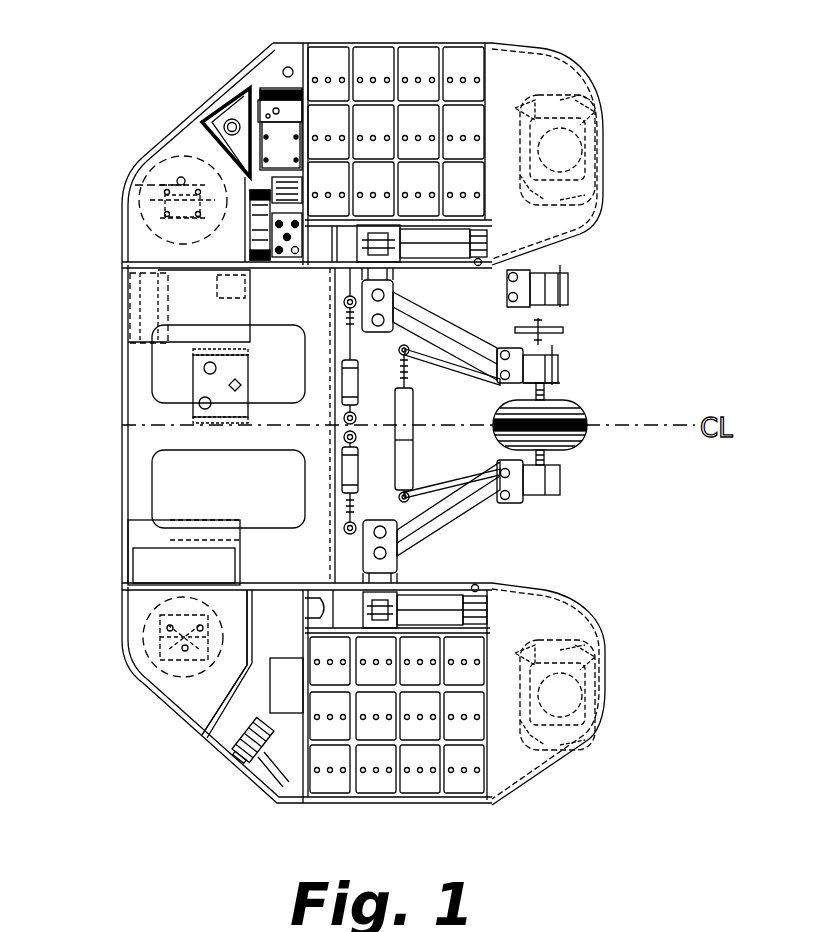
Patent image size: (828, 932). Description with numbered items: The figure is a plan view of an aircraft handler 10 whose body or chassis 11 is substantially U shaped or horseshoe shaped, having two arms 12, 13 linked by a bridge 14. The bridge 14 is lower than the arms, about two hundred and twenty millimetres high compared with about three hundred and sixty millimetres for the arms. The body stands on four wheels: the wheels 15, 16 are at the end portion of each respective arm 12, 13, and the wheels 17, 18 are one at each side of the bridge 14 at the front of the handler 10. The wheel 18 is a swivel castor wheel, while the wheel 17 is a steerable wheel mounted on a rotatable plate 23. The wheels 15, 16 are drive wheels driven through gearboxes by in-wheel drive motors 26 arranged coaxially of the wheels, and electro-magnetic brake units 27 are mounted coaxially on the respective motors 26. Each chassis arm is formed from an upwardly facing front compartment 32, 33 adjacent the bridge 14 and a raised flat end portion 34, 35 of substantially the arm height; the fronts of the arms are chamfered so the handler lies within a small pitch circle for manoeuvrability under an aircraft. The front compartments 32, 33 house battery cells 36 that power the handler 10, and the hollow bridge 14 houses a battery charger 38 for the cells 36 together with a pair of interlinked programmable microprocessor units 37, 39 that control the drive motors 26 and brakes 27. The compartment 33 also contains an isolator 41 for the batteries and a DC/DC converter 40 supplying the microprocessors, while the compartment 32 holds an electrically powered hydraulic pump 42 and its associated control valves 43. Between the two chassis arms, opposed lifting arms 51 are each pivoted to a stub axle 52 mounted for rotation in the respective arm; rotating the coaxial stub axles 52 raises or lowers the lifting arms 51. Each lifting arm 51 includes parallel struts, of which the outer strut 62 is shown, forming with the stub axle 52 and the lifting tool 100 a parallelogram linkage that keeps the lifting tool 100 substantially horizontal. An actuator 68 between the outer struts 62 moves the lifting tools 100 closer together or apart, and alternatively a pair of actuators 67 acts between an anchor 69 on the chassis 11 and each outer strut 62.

The handler 10 is at (285, 821).
The body or chassis 11 is at (515, 47).
The arm 12 is at (524, 242).
The arm 13 is at (527, 632).
The bridge 14 is at (307, 572).
The wheel 15 is at (600, 160).
The wheel 16 is at (598, 697).
The wheel 17 is at (175, 215).
The wheel 18 is at (137, 647).
The rotatable plate 23 is at (135, 185).
The in-wheel drive motor 26 is at (575, 100).
The electro-magnetic brake unit 27 is at (605, 210).
The front compartment 32 is at (275, 78).
The front compartment 33 is at (292, 639).
The raised flat end portion 34 is at (510, 82).
The raised flat end portion 35 is at (522, 768).
The battery cells 36 is at (330, 60).
The programmable microprocessor unit 37 is at (193, 393).
The battery charger 38 is at (147, 565).
The programmable microprocessor unit 39 is at (148, 320).
The DC/DC converter 40 is at (290, 690).
The isolator 41 is at (228, 748).
The electrically powered hydraulic pump 42 is at (257, 108).
The control valves 43 is at (253, 237).
The lifting arm 51 is at (440, 325).
The stub axle 52 is at (397, 275).
The outer strut 62 is at (456, 355).
The actuator 67 is at (345, 378).
The actuator 68 is at (413, 440).
The anchor 69 is at (347, 423).
The lifting tool 100 is at (560, 368).